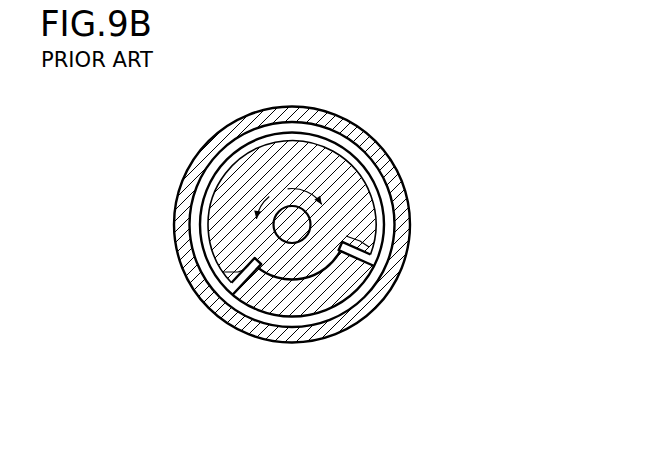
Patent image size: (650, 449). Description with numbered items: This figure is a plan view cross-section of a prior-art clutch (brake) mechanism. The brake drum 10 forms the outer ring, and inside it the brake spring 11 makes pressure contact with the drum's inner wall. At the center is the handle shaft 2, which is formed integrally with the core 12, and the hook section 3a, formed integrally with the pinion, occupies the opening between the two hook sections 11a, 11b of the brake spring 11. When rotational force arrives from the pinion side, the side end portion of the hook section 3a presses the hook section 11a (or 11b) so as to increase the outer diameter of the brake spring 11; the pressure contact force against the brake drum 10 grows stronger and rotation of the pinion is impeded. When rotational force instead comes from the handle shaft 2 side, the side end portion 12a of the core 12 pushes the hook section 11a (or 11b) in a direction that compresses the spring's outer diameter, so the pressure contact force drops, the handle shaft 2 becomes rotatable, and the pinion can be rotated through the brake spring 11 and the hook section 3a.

The brake drum 10 is at (393, 162).
The brake spring 11 is at (333, 137).
The hook section 11a is at (223, 290).
The hook section 11b is at (380, 260).
The core 12 is at (293, 155).
The side end portion 12a is at (245, 279).
The handle shaft 2 is at (298, 223).
The hook section 3a is at (332, 295).